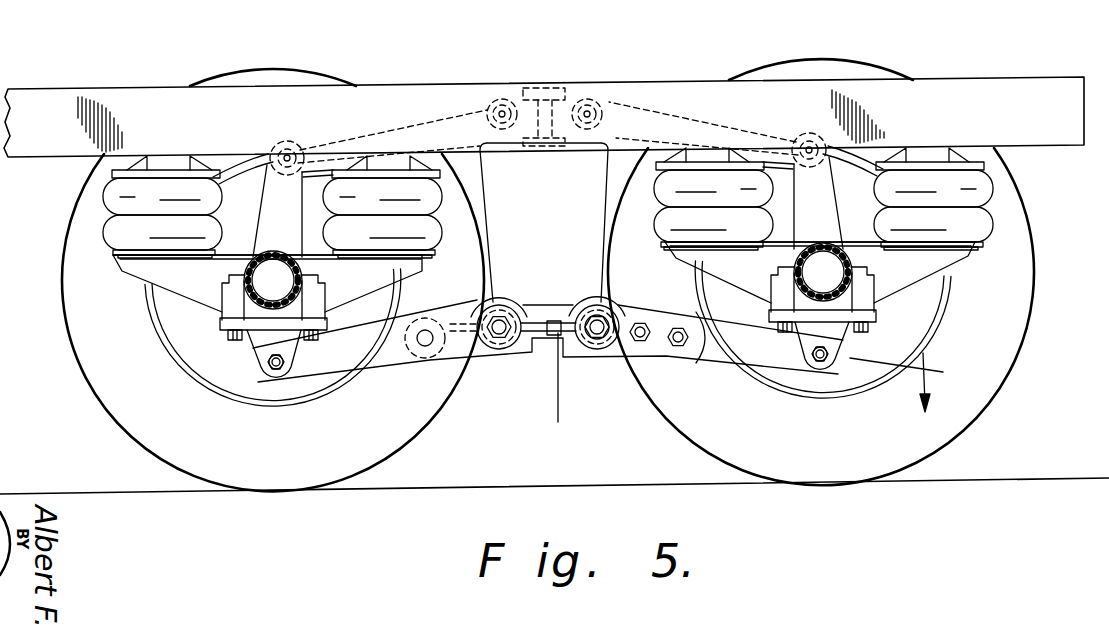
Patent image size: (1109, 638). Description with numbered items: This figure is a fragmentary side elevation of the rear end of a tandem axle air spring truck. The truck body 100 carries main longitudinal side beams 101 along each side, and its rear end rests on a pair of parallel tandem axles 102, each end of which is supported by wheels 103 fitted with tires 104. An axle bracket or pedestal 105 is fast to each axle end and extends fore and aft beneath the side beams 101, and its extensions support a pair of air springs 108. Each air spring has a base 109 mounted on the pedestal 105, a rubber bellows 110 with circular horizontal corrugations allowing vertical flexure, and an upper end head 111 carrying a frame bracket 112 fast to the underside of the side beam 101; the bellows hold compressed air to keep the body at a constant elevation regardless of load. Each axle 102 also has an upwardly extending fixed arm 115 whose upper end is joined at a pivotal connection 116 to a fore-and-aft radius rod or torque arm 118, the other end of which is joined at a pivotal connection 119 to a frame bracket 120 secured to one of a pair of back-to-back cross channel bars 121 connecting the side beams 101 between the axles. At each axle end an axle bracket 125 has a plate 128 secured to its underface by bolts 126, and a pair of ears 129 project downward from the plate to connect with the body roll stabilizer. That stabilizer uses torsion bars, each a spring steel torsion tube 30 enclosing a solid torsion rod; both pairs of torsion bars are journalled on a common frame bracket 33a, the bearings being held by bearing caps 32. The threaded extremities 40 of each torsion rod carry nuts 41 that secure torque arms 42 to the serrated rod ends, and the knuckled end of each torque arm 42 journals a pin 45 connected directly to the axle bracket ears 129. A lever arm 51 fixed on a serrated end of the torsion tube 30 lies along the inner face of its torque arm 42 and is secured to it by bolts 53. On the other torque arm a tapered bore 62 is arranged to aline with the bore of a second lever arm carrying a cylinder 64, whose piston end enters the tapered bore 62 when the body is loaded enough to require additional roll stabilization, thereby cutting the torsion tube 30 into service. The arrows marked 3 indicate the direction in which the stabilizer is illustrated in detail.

The section line 3 is at (760, 389).
The torsion tube 30 is at (593, 308).
The bearing cap 32 is at (560, 342).
The common frame bracket 33a is at (544, 222).
The threaded extremities 40 is at (587, 315).
The nuts 41 is at (483, 351).
The torque arm 42 is at (730, 358).
The pin 45 is at (280, 372).
The lever arm 51 is at (702, 355).
The bolts 53 is at (642, 322).
The tapered bore 62 is at (425, 330).
The cylinder 64 is at (410, 355).
The truck body 100 is at (957, 73).
The main longitudinal side beams 101 is at (1046, 95).
The tandem axles 102 is at (300, 262).
The wheels 103 is at (213, 387).
The tire 104 is at (140, 442).
The axle bracket or pedestal 105 is at (186, 290).
The air springs 108 is at (106, 196).
The base 109 is at (112, 253).
The bellows 110 is at (103, 226).
The upper end head 111 is at (198, 165).
The frame bracket 112 is at (157, 165).
The fixed arms 115 is at (270, 223).
The pivotal connection 116 is at (272, 176).
The radius rod or torque arm 118 is at (345, 130).
The pivotal connection 119 is at (485, 102).
The frame bracket 120 is at (495, 98).
The cross channel bars 121 is at (549, 86).
The axle bracket 125 is at (230, 290).
The bolts 126 is at (856, 336).
The plate 128 is at (256, 328).
The ears 129 is at (258, 374).